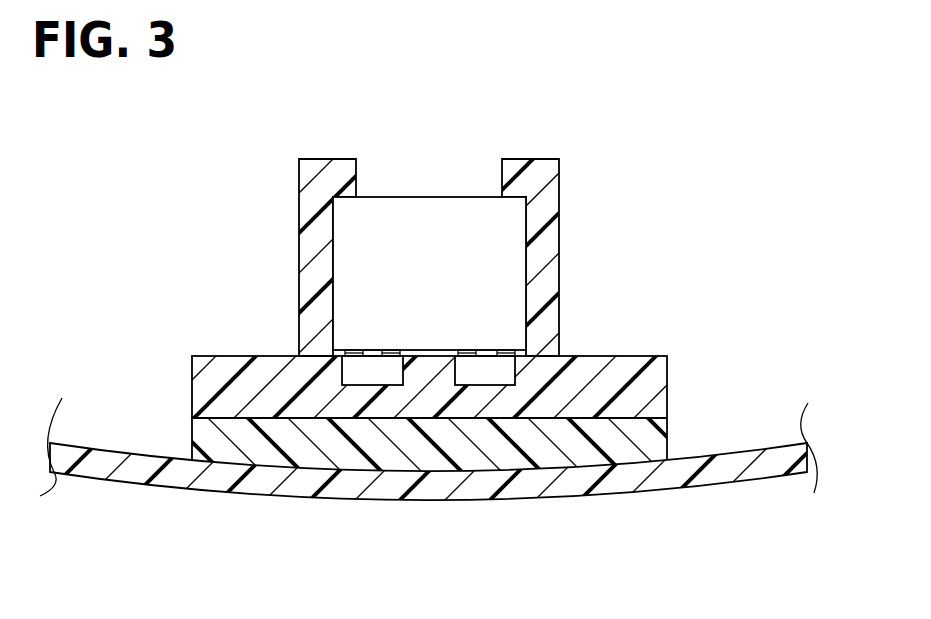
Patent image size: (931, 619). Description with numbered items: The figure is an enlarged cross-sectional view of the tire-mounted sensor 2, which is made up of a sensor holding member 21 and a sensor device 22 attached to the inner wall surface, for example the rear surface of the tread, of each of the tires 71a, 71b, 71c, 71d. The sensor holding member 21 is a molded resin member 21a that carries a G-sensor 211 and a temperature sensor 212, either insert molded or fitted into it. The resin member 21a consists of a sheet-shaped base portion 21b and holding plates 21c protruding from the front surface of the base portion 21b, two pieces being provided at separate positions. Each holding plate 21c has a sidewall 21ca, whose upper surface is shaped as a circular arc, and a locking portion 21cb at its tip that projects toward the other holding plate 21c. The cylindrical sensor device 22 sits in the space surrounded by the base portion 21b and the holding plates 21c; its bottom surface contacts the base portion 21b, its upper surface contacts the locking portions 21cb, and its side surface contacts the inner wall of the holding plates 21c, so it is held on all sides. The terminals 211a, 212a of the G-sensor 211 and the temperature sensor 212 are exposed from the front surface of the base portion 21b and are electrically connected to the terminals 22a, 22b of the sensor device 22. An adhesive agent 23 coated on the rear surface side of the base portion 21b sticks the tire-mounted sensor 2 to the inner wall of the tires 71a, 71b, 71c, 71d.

The tire-mounted sensor 2 is at (465, 337).
The sensor holding member 21 is at (465, 262).
The resin member 21a is at (465, 262).
The base portion 21b is at (667, 368).
The holding plate 21c is at (544, 230).
The sidewall 21ca is at (560, 233).
The locking portion 21cb is at (527, 165).
The sensor device 22 is at (371, 337).
The terminal 22a is at (308, 438).
The terminal 22b is at (470, 372).
The adhesive agent 23 is at (667, 425).
The G-sensor 211 is at (366, 385).
The terminal 211a is at (354, 352).
The temperature sensor 212 is at (464, 385).
The terminal 212a is at (467, 352).
The tire 71a is at (425, 490).
The tire 71b is at (425, 490).
The tire 71c is at (425, 490).
The tire 71d is at (652, 482).